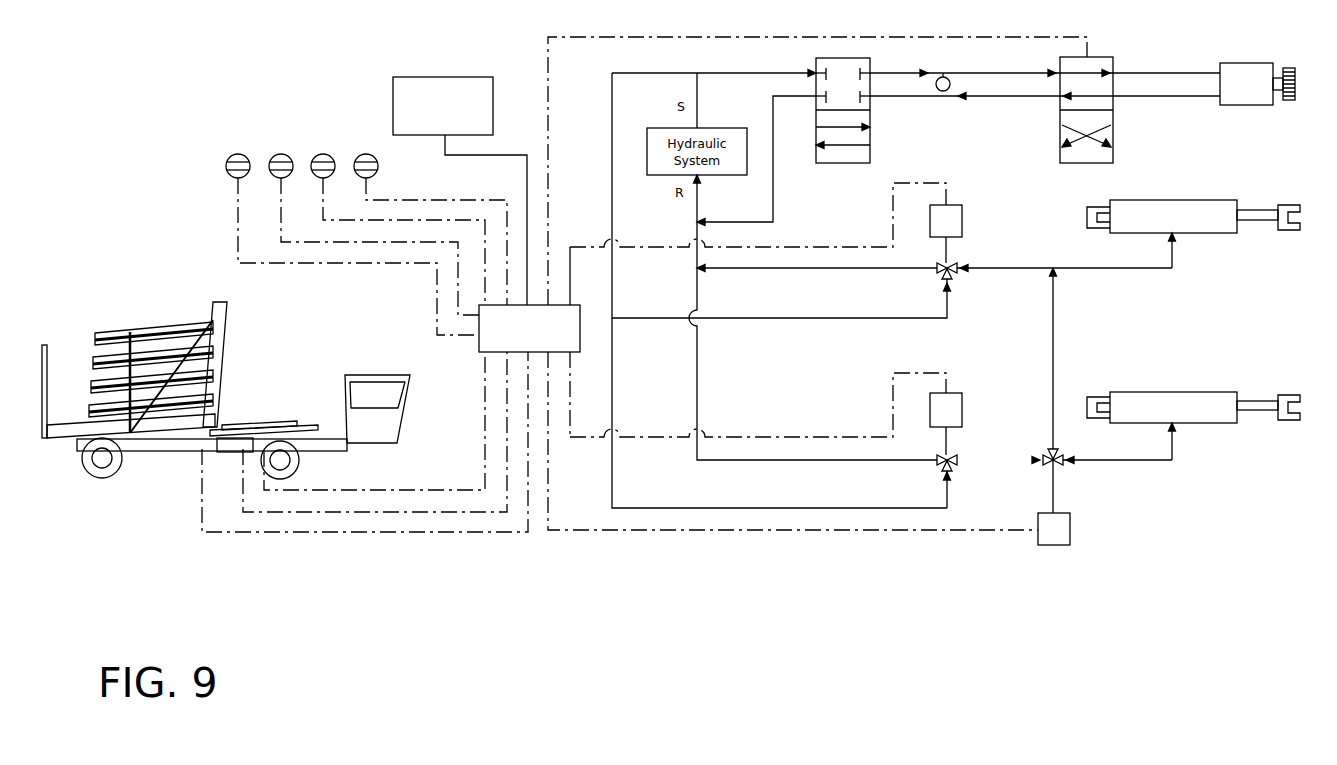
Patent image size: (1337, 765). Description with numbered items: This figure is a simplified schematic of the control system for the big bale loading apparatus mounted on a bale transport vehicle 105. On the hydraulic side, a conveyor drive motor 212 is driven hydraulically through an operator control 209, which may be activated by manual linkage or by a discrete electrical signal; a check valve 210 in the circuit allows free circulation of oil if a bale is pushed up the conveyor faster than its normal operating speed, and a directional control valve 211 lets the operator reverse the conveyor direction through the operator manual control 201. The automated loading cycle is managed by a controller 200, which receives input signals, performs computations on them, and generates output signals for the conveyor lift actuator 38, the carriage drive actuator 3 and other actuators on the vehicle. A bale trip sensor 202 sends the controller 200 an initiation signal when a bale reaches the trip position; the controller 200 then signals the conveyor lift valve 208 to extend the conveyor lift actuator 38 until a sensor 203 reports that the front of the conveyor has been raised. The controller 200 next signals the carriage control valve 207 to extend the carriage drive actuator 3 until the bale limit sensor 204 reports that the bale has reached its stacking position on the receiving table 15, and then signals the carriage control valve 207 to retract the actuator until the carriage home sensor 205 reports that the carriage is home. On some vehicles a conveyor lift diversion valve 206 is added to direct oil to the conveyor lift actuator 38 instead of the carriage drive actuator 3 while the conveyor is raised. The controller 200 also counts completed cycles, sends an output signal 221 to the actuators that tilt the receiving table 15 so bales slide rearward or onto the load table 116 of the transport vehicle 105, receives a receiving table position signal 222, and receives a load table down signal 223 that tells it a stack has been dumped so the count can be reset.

The carriage drive actuator 3 is at (1178, 402).
The receiving table 15 is at (240, 428).
The conveyor lift actuator 38 is at (1198, 212).
The bale transport vehicle 105 is at (152, 458).
The load table 116 is at (72, 430).
The controller 200 is at (483, 347).
The operator manual control 201 is at (405, 90).
The bale trip sensor 202 is at (372, 157).
The sensor 203 is at (328, 157).
The bale limit sensor 204 is at (285, 157).
The carriage home sensor 205 is at (228, 175).
The conveyor lift diversion valve 206 is at (1062, 535).
The carriage control valve 207 is at (955, 400).
The conveyor lift valve 208 is at (955, 213).
The operator control 209 is at (838, 63).
The check valve 210 is at (945, 78).
The directional control valve 211 is at (1100, 62).
The conveyor drive motor 212 is at (1258, 63).
The output signal 221 is at (395, 489).
The receiving table position signal 222 is at (405, 512).
The load table down signal 223 is at (342, 533).